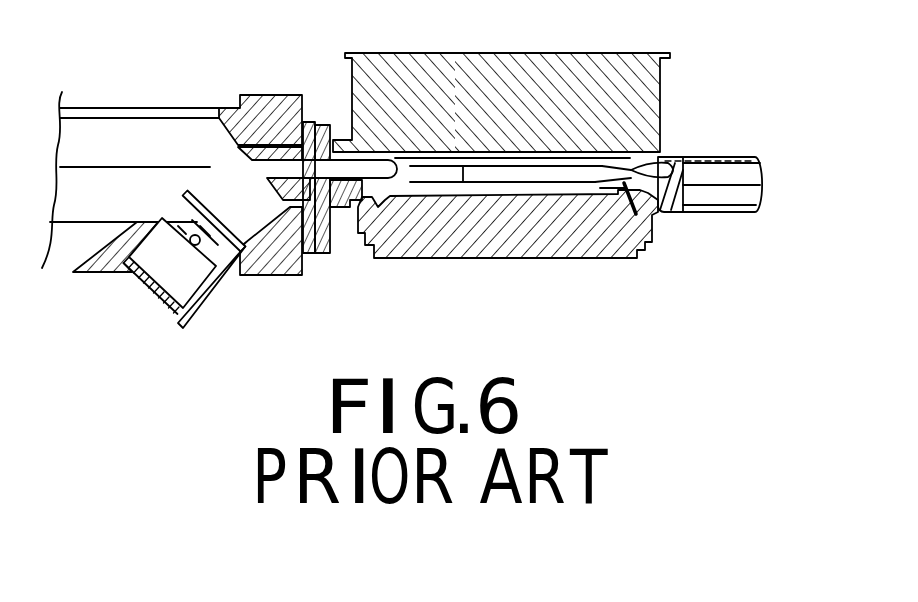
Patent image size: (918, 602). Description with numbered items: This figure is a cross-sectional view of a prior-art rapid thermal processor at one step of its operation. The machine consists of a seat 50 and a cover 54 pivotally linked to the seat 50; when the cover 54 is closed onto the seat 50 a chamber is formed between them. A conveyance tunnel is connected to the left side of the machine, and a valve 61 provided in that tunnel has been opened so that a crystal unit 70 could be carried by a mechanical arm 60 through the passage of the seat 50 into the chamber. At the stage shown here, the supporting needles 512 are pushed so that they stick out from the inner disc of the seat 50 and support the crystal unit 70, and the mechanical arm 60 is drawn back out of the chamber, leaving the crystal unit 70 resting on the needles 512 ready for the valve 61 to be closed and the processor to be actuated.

The seat 50 is at (647, 237).
The cover 54 is at (657, 105).
The mechanical arm 60 is at (155, 167).
The valve 61 is at (237, 248).
The crystal unit 70 is at (456, 166).
The supporting needles 512 is at (663, 156).